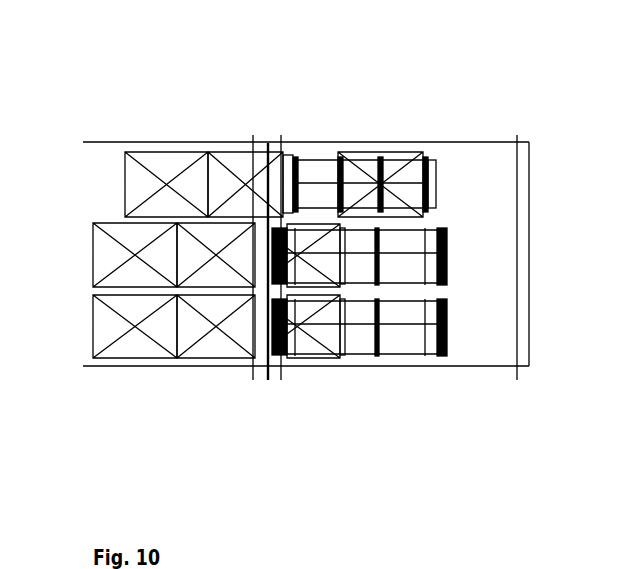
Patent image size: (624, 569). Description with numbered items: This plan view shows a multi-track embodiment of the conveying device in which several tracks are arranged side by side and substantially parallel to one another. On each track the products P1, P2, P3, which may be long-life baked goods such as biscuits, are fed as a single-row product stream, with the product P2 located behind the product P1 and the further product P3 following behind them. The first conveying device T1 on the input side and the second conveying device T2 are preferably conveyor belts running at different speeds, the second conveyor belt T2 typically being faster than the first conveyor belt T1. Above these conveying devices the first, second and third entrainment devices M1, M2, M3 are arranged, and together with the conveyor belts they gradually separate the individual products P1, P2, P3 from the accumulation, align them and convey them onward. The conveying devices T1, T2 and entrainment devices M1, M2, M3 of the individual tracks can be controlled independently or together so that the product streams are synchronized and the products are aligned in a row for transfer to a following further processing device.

The first conveying device T1 is at (98, 160).
The second conveying device T2 is at (497, 155).
The product P1 is at (397, 165).
The product P2 is at (242, 160).
The product P3 is at (160, 165).
The first entrainment device M1 is at (435, 163).
The second entrainment device M2 is at (347, 162).
The third entrainment device M3 is at (303, 162).